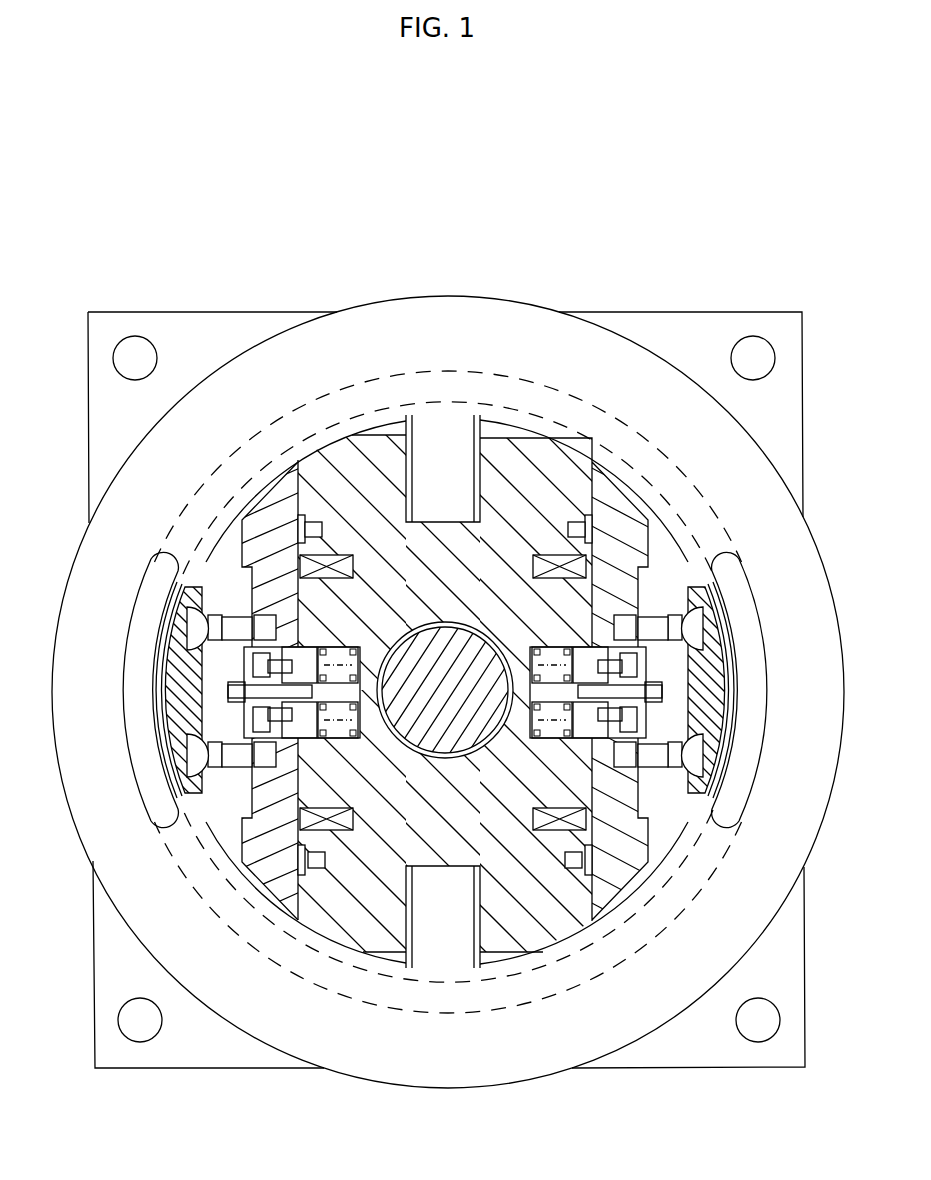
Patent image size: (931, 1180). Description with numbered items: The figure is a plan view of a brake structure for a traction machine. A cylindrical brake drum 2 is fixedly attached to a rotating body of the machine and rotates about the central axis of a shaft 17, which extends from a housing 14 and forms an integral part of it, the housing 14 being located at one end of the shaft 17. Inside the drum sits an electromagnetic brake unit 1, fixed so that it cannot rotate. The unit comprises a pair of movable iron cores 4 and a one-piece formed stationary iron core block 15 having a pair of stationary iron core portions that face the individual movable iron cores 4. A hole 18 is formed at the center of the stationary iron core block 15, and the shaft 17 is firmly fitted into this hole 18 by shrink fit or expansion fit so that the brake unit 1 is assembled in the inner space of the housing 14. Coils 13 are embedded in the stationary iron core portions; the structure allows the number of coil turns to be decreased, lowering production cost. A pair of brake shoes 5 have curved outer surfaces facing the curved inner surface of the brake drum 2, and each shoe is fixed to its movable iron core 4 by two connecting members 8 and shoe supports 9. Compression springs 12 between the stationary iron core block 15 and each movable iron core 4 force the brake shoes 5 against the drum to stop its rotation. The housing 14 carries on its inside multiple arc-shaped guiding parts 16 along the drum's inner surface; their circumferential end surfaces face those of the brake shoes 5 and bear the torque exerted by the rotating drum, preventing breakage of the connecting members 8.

The electromagnetic brake unit 1 is at (386, 430).
The brake drum 2 is at (438, 385).
The movable iron core 4 is at (283, 493).
The brake shoe 5 is at (180, 707).
The connecting member 8 is at (232, 614).
The shoe support 9 is at (187, 645).
The compression spring 12 is at (348, 642).
The coil 13 is at (347, 555).
The housing 14 is at (515, 301).
The stationary iron core block 15 is at (535, 460).
The guiding part 16 is at (210, 540).
The shaft 17 is at (452, 745).
The hole 18 is at (470, 624).